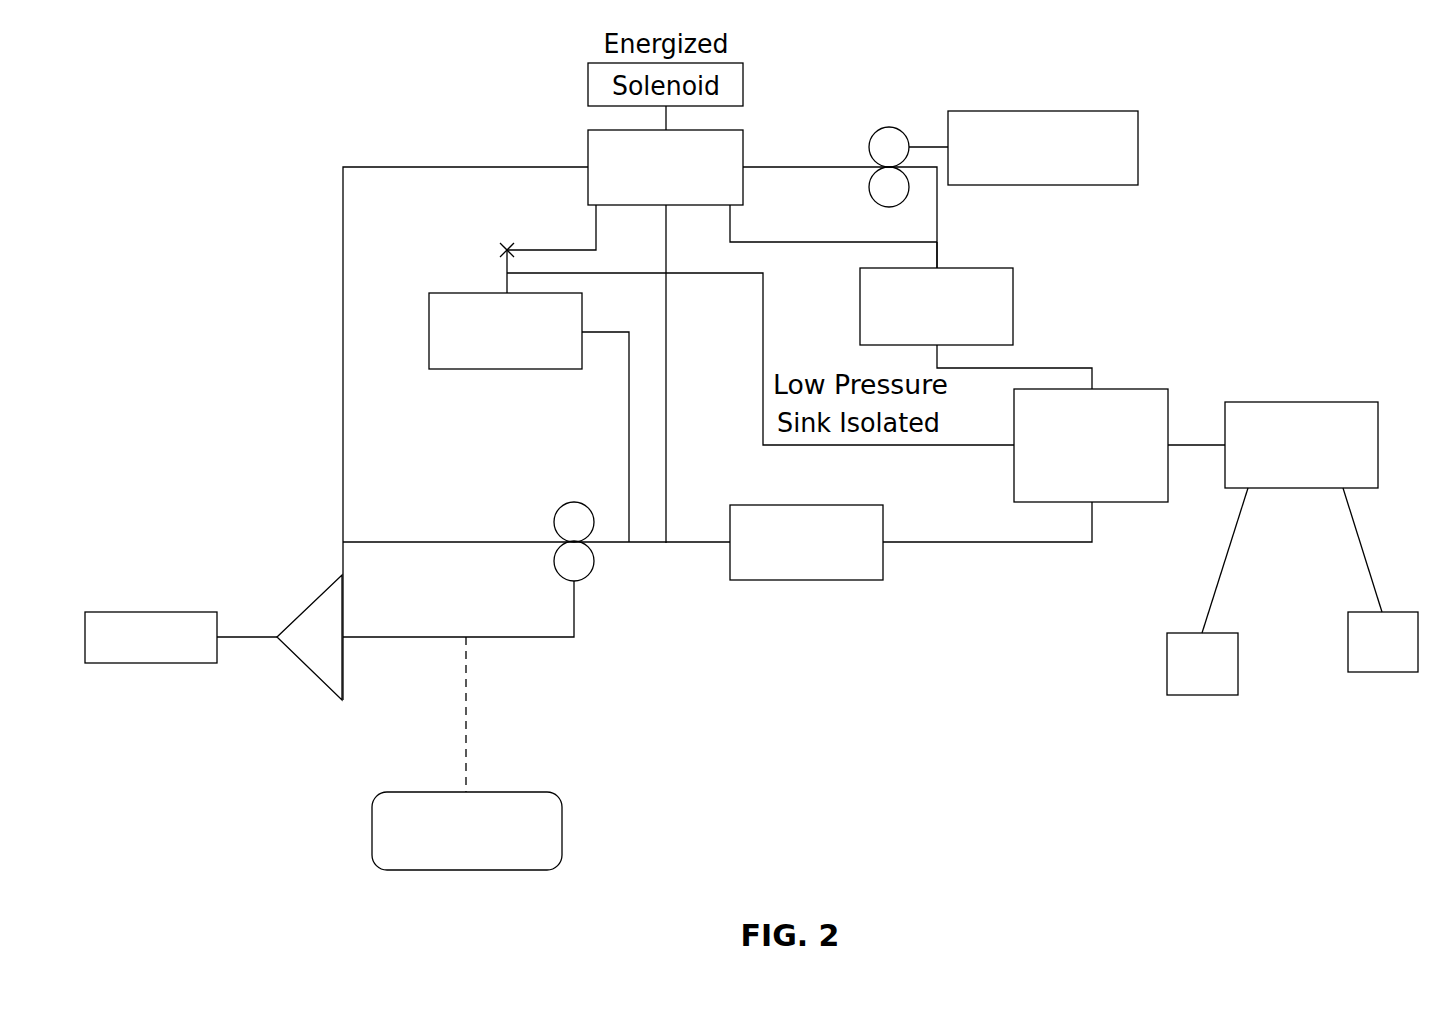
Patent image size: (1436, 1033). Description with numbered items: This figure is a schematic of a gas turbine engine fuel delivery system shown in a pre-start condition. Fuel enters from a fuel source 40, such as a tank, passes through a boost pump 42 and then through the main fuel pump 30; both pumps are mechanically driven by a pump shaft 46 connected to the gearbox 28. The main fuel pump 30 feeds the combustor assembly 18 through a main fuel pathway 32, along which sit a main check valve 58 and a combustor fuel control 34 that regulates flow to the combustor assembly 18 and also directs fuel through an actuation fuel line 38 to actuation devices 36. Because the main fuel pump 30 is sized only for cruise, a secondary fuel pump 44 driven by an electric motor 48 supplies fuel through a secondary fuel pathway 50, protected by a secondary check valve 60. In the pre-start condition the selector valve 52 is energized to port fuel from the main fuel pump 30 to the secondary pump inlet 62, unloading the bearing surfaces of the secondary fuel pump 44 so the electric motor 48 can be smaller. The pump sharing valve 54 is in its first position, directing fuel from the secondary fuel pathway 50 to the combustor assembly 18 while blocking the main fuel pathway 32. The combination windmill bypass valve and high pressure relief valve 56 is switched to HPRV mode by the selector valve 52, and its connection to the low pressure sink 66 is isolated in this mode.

The combustor assembly 18 is at (1202, 664).
The gearbox 28 is at (467, 831).
The main fuel pump 30 is at (595, 560).
The main fuel pathway 32 is at (990, 542).
The combustor fuel control 34 is at (1302, 402).
The actuation devices 36 is at (1383, 642).
The actuation fuel line 38 is at (1363, 558).
The fuel source 40 is at (151, 637).
The boost pump 42 is at (312, 602).
The secondary fuel pump 44 is at (889, 127).
The pump shaft 46 is at (535, 637).
The electric motor 48 is at (1138, 147).
The secondary fuel pathway 50 is at (937, 230).
The selector valve 52 is at (588, 183).
The pump sharing valve 54 is at (1140, 389).
The combination windmill bypass valve and high pressure relief valve 56 is at (467, 369).
The main check valve 58 is at (760, 580).
The secondary check valve 60 is at (1013, 306).
The secondary pump inlet 62 is at (869, 187).
The low pressure sink 66 is at (763, 327).